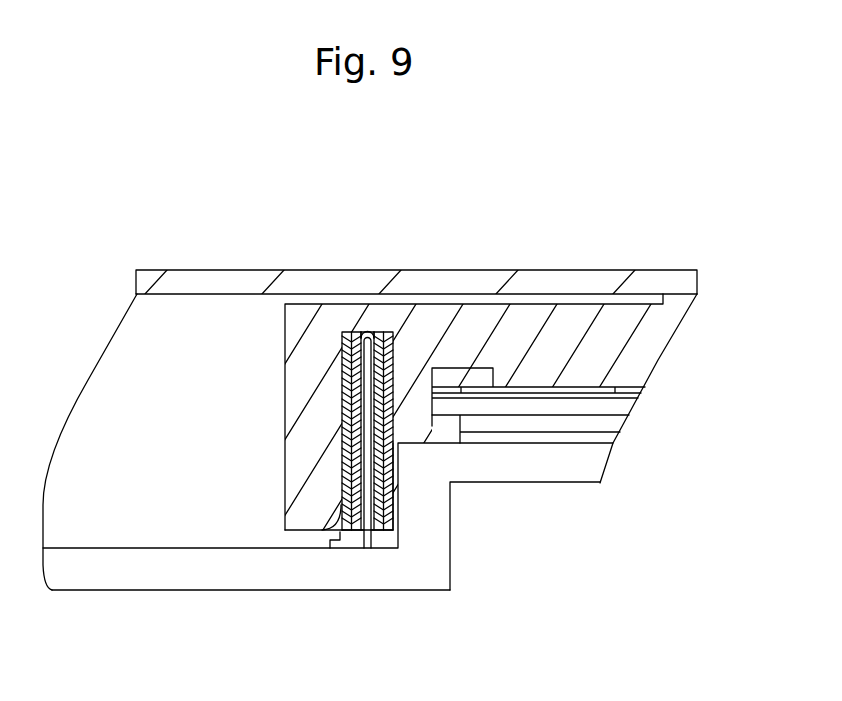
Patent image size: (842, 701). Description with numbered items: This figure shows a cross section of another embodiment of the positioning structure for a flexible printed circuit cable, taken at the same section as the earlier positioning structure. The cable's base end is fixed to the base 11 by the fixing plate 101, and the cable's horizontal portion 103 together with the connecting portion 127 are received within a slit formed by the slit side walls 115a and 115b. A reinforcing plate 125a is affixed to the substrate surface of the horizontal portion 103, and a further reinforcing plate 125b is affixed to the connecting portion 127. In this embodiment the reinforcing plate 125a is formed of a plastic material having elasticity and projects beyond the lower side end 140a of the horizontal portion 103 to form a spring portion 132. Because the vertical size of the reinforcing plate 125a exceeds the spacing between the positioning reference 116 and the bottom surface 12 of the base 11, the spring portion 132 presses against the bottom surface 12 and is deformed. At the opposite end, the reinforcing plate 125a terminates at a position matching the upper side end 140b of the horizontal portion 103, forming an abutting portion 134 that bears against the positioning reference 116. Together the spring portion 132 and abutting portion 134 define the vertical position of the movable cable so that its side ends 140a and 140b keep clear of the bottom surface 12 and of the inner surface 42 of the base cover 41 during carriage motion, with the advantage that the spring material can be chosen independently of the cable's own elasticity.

The base cover 41 is at (208, 270).
The inner surface of the base cover 42 is at (204, 295).
The bottom surface of the base 12 is at (157, 547).
The base 11 is at (237, 590).
The fixing plate 101 is at (520, 307).
The horizontal portion 103 is at (356, 435).
The abutting portion 134 is at (352, 332).
The reinforcing plate 125a is at (343, 402).
The reinforcing plate 125b is at (450, 325).
The side end 140b is at (358, 332).
The side end 140a is at (353, 548).
The positioning reference 116 is at (386, 332).
The slit side wall 115a is at (284, 497).
The slit side wall 115b is at (432, 426).
The connecting portion 127 is at (388, 493).
The spring portion 132 is at (352, 546).